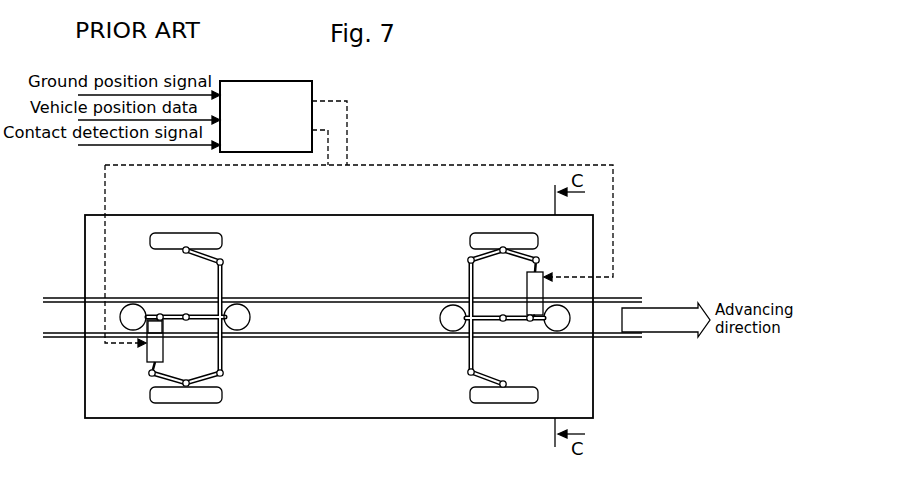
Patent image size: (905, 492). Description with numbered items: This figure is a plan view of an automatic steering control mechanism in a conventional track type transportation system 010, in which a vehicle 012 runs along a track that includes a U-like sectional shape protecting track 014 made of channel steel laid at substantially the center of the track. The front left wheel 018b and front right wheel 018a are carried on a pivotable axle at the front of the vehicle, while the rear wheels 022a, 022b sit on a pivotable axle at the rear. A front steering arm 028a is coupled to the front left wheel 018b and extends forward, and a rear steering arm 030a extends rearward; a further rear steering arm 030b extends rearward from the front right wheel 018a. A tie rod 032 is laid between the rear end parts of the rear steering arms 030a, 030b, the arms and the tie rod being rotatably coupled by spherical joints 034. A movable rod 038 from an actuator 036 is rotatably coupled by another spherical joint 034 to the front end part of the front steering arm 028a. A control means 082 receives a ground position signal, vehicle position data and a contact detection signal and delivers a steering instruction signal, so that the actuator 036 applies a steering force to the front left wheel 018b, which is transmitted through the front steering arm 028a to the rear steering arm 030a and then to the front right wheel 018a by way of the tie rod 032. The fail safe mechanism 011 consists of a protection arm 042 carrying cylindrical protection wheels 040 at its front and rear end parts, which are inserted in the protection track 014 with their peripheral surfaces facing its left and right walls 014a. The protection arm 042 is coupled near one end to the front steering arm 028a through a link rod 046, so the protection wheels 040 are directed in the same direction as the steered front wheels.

The track type transportation system 010 is at (482, 140).
The fail safe mechanism 011 is at (322, 341).
The vehicle 012 is at (85, 232).
The protection track 014 is at (336, 339).
The left and right walls 014a is at (271, 303).
The front right wheel 018a is at (475, 233).
The front left wheel 018b is at (490, 403).
The rear wheel 022a is at (157, 233).
The rear wheel 022b is at (197, 403).
The front steering arm 028a is at (538, 258).
The rear steering arm 030a is at (470, 259).
The rear steering arm 030b is at (467, 386).
The tie rod 032 is at (470, 285).
The spherical joint 034 is at (223, 262).
The actuator 036 is at (147, 352).
The movable rod 038 is at (150, 368).
The protection wheels 040 is at (110, 326).
The protection arm 042 is at (200, 316).
The link rod 046 is at (163, 357).
The control means 082 is at (312, 88).